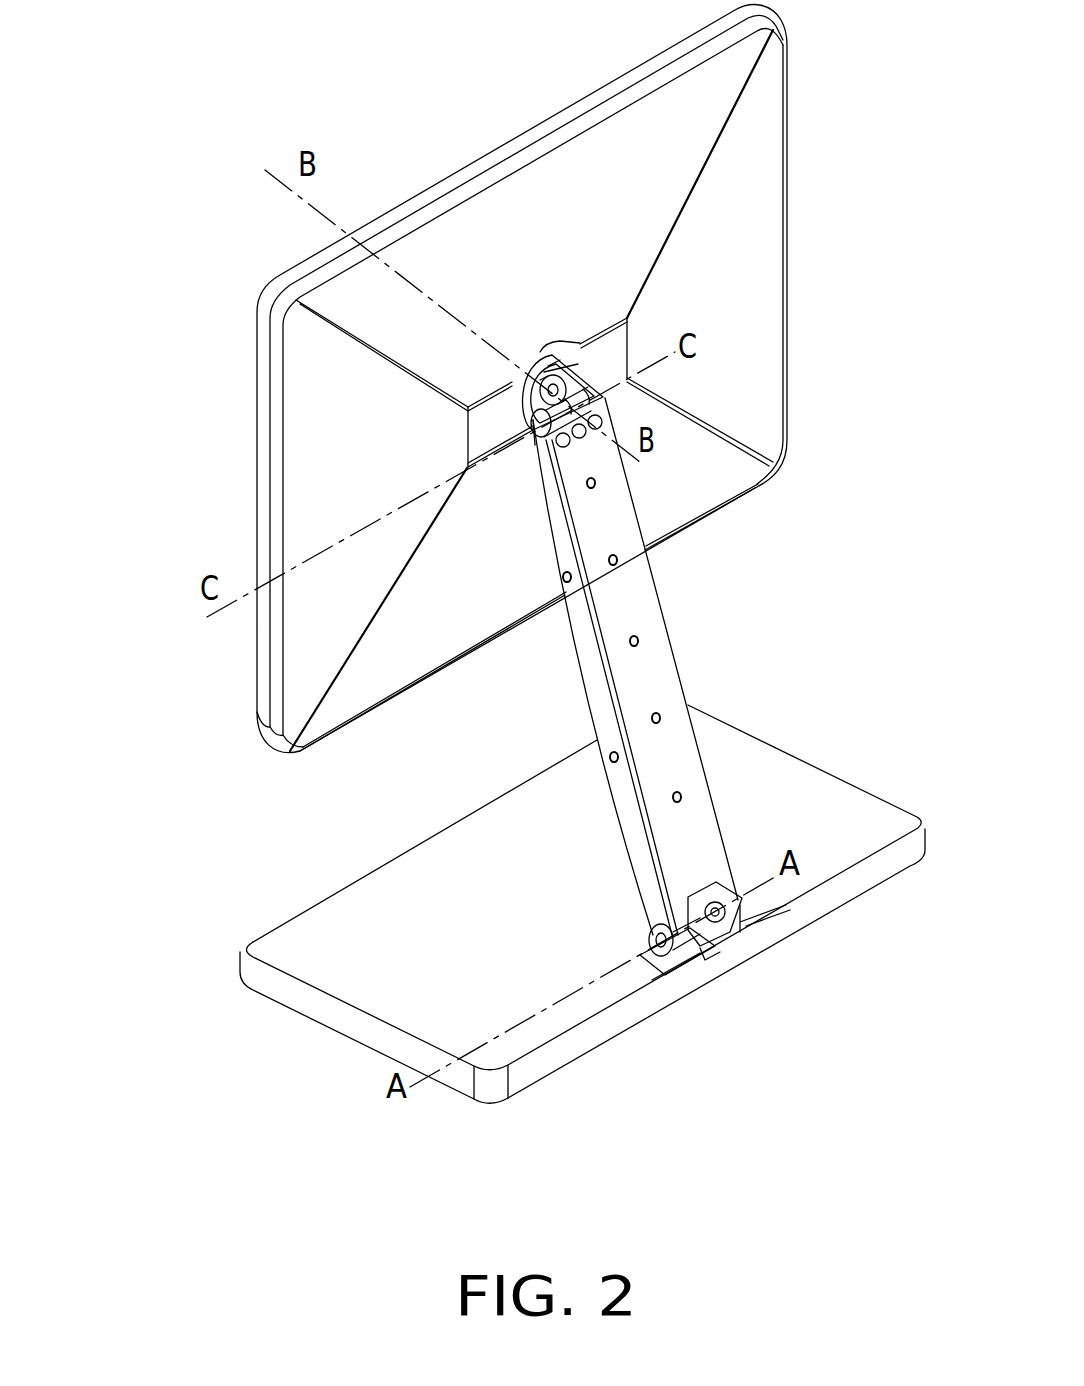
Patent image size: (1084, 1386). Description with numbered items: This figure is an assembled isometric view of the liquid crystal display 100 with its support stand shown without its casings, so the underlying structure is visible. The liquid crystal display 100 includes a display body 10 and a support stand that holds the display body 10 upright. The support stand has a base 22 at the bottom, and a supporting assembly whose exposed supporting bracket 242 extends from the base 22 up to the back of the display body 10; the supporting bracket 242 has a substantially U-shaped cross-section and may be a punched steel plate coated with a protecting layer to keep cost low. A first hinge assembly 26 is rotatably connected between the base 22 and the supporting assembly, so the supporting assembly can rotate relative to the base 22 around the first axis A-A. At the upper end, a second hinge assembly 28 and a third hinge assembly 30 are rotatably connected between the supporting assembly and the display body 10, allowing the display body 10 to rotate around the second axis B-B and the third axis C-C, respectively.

The liquid crystal display 100 is at (262, 93).
The display body 10 is at (748, 122).
The second hinge assembly 28 is at (600, 352).
The third hinge assembly 30 is at (522, 456).
The supporting bracket 242 is at (657, 675).
The base 22 is at (350, 935).
The first hinge assembly 26 is at (690, 962).